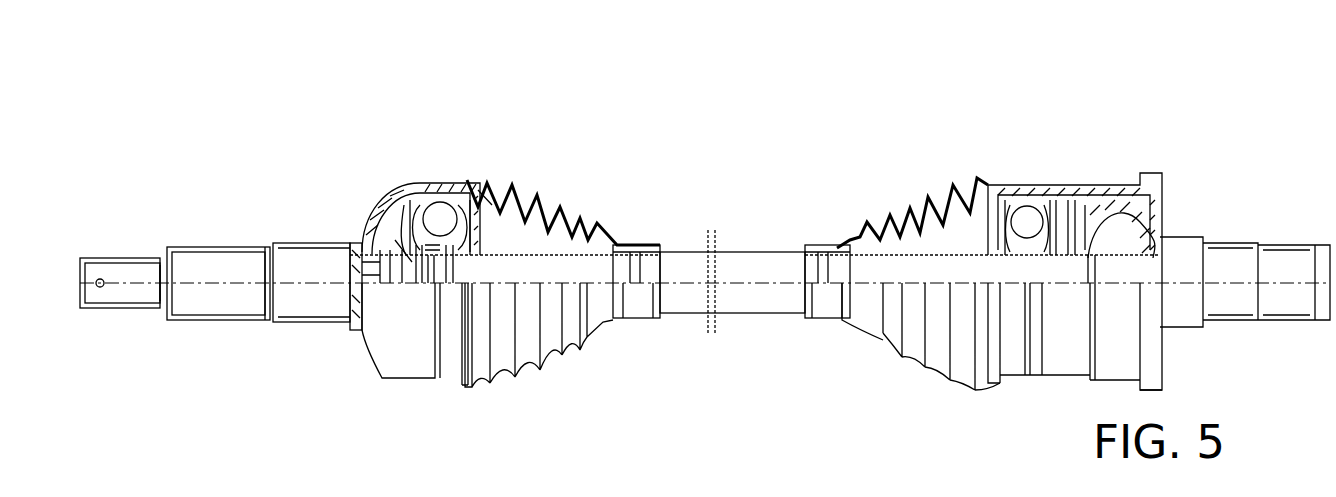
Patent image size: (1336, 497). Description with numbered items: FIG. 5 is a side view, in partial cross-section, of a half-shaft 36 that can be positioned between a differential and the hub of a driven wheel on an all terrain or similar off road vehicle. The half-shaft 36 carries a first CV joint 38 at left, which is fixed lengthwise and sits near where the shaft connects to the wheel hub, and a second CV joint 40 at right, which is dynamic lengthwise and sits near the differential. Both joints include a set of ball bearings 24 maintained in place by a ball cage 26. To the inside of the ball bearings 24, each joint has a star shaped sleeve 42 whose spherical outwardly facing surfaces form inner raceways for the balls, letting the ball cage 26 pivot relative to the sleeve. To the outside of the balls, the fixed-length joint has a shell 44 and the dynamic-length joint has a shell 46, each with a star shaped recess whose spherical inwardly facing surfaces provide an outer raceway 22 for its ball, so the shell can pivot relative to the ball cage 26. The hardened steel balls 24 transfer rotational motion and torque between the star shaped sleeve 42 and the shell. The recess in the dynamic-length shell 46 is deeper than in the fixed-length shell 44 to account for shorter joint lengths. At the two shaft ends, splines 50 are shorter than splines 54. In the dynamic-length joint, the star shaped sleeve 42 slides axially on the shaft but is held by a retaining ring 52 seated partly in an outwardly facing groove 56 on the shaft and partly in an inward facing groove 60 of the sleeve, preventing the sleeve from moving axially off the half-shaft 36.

The outer raceway 22 is at (470, 202).
The ball bearings 24 is at (438, 217).
The ball cage 26 is at (410, 222).
The half-shaft 36 is at (740, 262).
The first CV joint 38 is at (402, 153).
The second CV joint 40 is at (1207, 100).
The star shaped sleeve 42 is at (431, 250).
The fixed-length shell 44 is at (228, 273).
The dynamic-length shell 46 is at (1130, 192).
The splines 50 is at (418, 252).
The retaining ring 52 is at (412, 262).
The splines 54 is at (945, 200).
The outwardly facing groove 56 is at (1090, 262).
The inward facing groove 60 is at (410, 257).